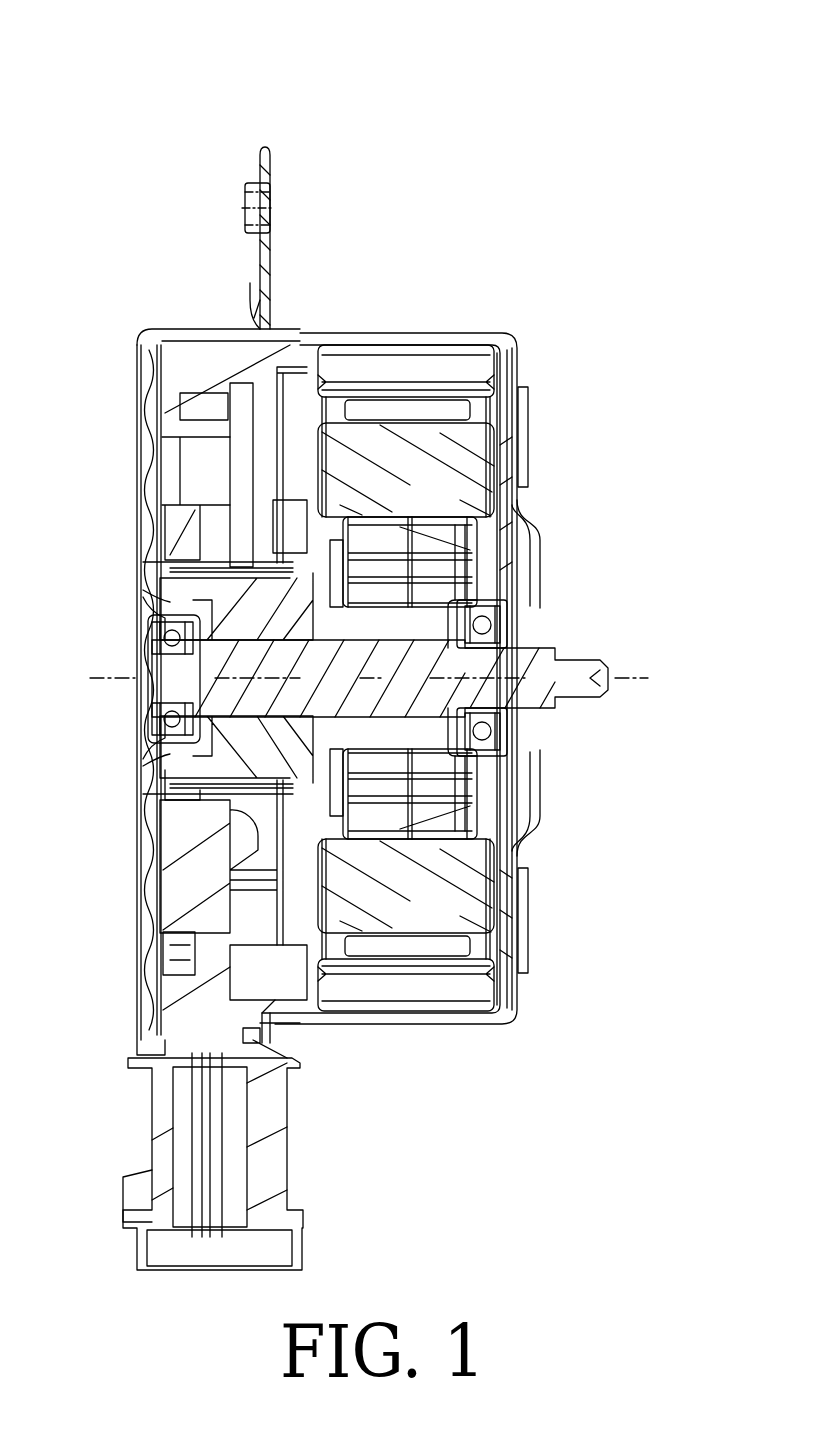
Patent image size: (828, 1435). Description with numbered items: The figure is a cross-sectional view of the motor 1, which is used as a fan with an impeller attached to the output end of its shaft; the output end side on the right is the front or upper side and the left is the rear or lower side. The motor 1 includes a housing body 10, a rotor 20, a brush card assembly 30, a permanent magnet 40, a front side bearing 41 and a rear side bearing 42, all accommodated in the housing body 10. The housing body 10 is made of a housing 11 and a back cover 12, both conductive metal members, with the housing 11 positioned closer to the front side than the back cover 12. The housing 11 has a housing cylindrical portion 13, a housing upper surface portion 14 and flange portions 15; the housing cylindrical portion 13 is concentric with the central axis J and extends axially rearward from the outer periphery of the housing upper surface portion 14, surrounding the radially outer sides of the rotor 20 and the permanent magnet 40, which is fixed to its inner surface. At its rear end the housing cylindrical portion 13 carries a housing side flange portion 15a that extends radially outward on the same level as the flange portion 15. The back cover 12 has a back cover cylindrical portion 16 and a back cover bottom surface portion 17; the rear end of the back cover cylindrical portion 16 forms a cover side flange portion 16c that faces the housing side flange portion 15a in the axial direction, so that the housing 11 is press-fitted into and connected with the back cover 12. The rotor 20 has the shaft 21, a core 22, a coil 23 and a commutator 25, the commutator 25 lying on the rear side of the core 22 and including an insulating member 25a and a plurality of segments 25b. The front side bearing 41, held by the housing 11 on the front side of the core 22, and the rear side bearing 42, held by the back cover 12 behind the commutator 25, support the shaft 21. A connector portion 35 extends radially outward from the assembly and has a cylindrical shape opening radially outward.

The motor 1 is at (536, 108).
The housing body 10 is at (210, 47).
The housing 11 is at (343, 260).
The back cover 12 is at (184, 165).
The housing cylindrical portion 13 is at (425, 345).
The housing upper surface portion 14 is at (508, 378).
The flange portion 15 is at (260, 180).
The housing side flange portion 15a is at (285, 1030).
The back cover cylindrical portion 16 is at (184, 330).
The cover side flange portion 16c is at (255, 295).
The back cover bottom surface portion 17 is at (142, 768).
The rotor 20 is at (604, 686).
The shaft 21 is at (549, 655).
The core 22 is at (470, 548).
The coil 23 is at (500, 458).
The commutator 25 is at (150, 575).
The insulating member 25a is at (142, 790).
The segments 25b is at (150, 610).
The brush card assembly 30 is at (162, 335).
The connector portion 35 is at (152, 1122).
The permanent magnet 40 is at (458, 365).
The front side bearing 41 is at (500, 733).
The rear side bearing 42 is at (150, 720).
The central axis J is at (630, 675).